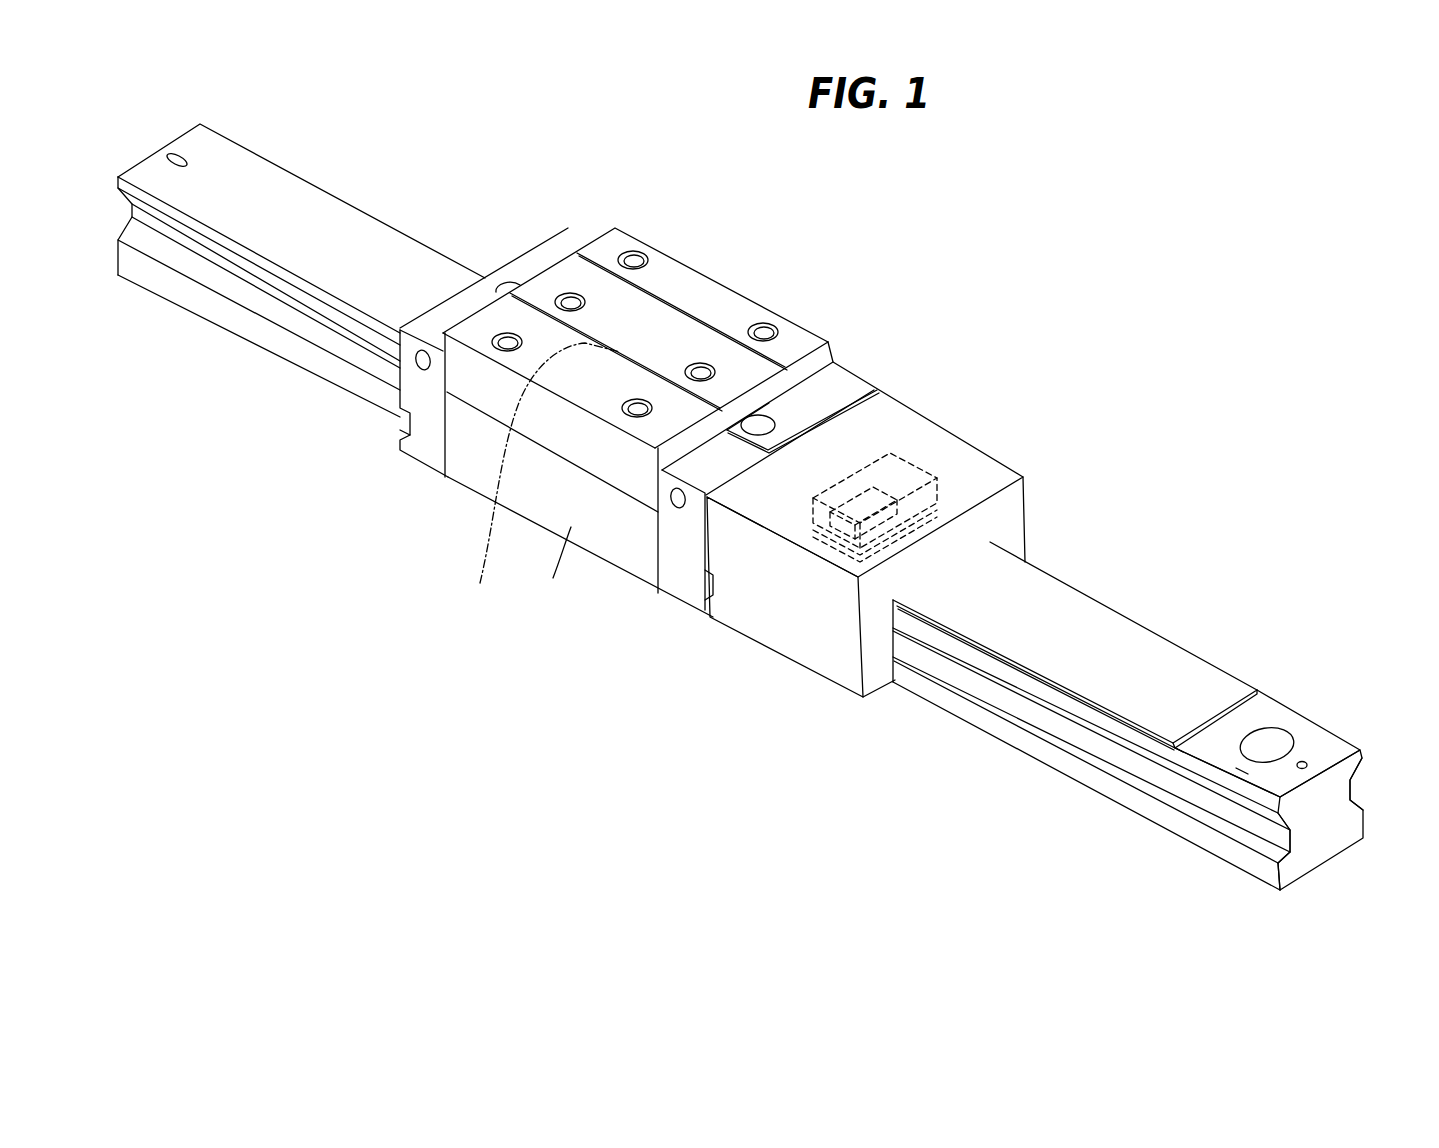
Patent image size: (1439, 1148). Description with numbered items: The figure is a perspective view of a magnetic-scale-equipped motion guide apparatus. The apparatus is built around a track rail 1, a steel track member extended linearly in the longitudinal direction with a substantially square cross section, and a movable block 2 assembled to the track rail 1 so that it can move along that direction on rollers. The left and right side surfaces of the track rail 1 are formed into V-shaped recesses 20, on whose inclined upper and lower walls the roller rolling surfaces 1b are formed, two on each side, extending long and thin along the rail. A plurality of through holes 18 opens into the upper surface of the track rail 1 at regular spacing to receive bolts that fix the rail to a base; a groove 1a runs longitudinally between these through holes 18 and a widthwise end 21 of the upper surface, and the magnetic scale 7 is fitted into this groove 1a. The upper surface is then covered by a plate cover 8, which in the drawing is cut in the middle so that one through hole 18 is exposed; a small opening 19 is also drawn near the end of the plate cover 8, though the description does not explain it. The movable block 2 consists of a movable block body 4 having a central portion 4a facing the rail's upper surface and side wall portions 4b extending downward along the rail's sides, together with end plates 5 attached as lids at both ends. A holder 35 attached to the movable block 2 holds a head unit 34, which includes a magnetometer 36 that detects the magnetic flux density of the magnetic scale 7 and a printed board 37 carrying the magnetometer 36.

The track rail 1 is at (1280, 692).
The groove 1a is at (1306, 762).
The roller rolling surface 1b is at (1352, 780).
The movable block 2 is at (732, 274).
The movable block body 4 is at (533, 501).
The central portion 4a is at (534, 480).
The side wall portion 4b is at (556, 572).
The end plate 5 is at (568, 228).
The magnetic scale 7 is at (1245, 772).
The plate cover 8 is at (1126, 638).
The through hole 18 is at (1283, 738).
The slot of rail cover 19 is at (190, 157).
The V-shaped recess 20 is at (1360, 793).
The widthwise end 21 is at (1183, 753).
The head unit 34 is at (913, 463).
The holder 35 is at (912, 432).
The magnetometer 36 is at (876, 532).
The printed board 37 is at (930, 515).